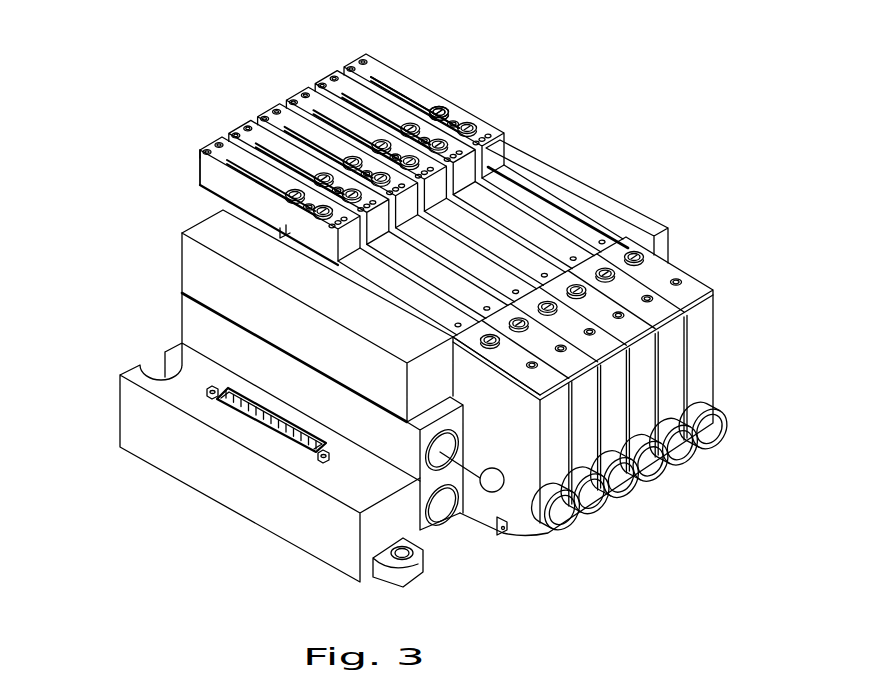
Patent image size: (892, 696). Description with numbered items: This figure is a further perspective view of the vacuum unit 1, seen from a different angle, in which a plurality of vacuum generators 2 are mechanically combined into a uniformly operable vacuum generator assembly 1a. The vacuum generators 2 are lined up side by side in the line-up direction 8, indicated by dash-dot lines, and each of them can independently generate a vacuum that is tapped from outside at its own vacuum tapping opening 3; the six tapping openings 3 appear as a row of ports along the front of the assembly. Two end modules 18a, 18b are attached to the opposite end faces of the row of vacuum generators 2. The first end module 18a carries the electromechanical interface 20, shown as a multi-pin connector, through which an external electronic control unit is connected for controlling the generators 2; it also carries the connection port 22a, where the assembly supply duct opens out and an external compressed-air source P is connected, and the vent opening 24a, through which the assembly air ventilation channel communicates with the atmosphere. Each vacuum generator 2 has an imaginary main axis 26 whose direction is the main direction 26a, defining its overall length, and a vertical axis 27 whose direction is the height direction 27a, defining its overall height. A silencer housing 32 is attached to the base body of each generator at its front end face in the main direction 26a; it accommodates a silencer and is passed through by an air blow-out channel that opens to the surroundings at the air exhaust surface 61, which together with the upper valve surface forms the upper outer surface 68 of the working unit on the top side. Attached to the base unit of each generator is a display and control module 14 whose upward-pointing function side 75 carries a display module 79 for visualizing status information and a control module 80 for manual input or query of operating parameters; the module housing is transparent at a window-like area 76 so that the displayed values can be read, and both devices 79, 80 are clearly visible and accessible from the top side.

The vacuum unit 1 is at (421, 304).
The vacuum generator assembly 1a is at (185, 117).
The vacuum generator 2 is at (495, 218).
The vacuum tapping opening 3 is at (712, 433).
The line-up direction 8 is at (303, 333).
The display and control module 14 is at (383, 78).
The first end module 18a is at (128, 432).
The second end module 18b is at (650, 232).
The electromechanical interface 20 is at (252, 433).
The connection port 22a is at (437, 453).
The vent opening 24a is at (437, 517).
The main axis 26 is at (626, 433).
The main direction 26a is at (626, 433).
The vertical axis 27 is at (371, 131).
The height direction 27a is at (371, 131).
The silencer housing 32 is at (518, 520).
The air exhaust surface 61 is at (668, 270).
The upper outer surface 68 is at (572, 230).
The function side 75 is at (318, 200).
The window-like area 76 is at (407, 88).
The display module 79 is at (260, 143).
The control module 80 is at (455, 108).